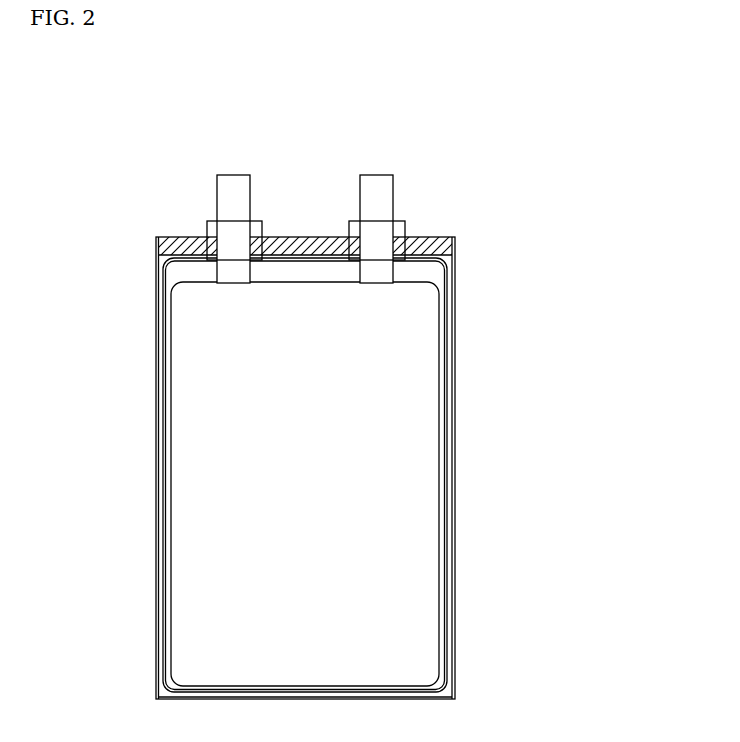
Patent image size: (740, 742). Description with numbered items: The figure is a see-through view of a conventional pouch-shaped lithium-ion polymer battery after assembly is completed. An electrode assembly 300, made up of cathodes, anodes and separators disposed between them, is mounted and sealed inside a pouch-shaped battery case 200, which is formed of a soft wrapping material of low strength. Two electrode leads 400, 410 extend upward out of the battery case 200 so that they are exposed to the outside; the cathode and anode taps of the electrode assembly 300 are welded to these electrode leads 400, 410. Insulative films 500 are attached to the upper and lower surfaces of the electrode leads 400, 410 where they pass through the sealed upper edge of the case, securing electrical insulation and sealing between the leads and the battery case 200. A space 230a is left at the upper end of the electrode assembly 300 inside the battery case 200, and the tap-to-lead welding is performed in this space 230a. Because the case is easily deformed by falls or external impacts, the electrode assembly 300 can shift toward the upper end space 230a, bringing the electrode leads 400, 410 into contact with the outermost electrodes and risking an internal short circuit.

The battery case 200 is at (455, 597).
The space 230a is at (300, 273).
The electrode assembly 300 is at (197, 482).
The electrode lead 400 is at (233, 175).
The electrode lead 410 is at (378, 175).
The insulative film 500 is at (207, 222).